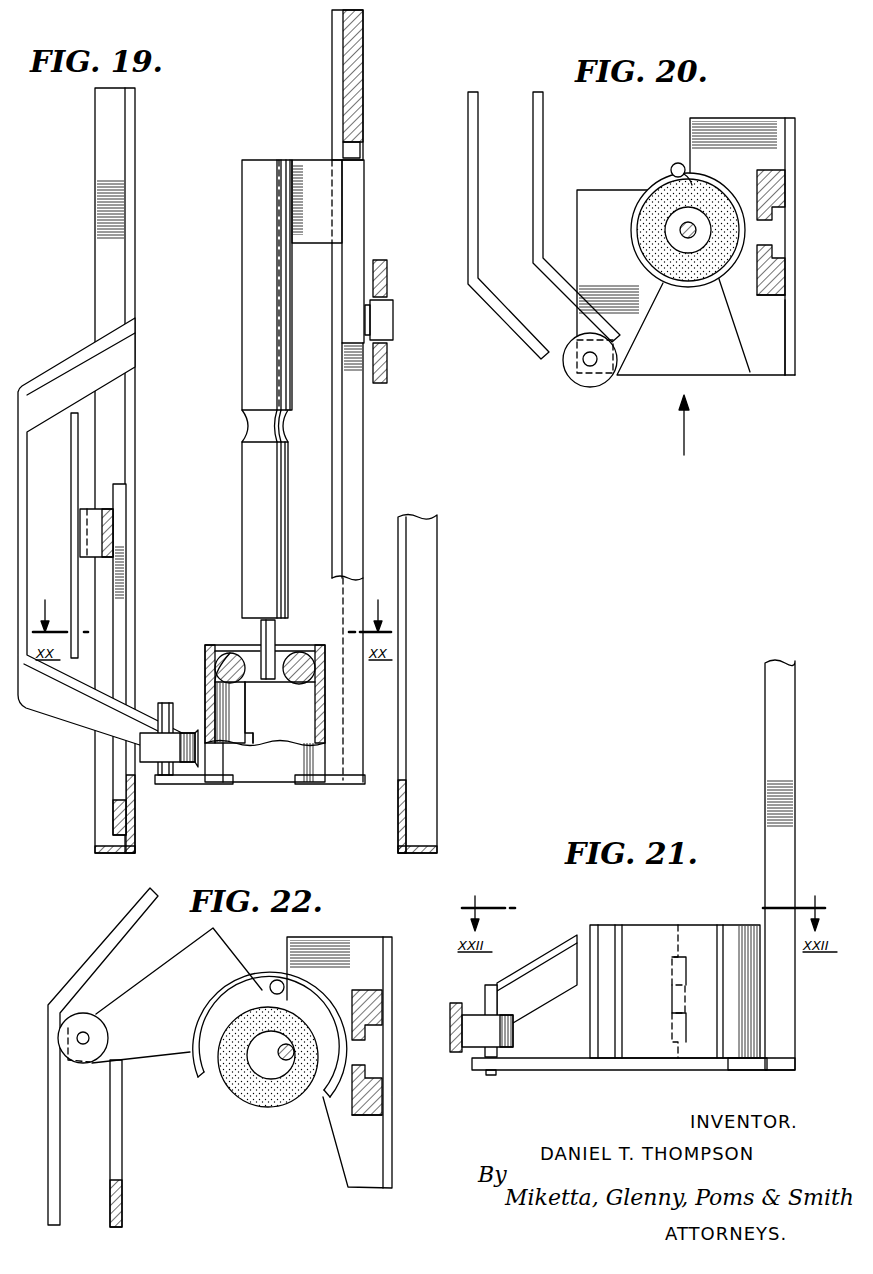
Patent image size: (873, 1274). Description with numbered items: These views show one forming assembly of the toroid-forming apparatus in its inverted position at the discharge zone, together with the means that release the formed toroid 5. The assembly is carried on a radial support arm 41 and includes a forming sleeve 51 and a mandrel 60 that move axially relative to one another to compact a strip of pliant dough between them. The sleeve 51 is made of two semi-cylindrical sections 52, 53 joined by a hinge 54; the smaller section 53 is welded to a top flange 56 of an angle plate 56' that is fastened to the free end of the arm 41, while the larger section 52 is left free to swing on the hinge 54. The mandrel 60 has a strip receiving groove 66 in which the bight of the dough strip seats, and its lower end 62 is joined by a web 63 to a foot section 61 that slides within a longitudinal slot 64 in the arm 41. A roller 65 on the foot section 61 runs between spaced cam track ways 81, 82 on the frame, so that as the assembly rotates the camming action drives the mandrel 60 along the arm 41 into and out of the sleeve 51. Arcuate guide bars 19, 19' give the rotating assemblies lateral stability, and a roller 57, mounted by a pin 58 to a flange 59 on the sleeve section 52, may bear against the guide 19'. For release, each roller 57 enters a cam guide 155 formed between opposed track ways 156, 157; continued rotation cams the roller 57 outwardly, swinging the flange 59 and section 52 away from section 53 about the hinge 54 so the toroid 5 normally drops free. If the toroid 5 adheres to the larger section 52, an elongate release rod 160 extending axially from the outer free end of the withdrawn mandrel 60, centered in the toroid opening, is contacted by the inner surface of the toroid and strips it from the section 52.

In FIG. 19, the toroid 5 is at (299, 653).
In FIG. 20, the toroid 5 is at (702, 182).
In FIG. 22, the toroid 5 is at (278, 1118).
In FIG. 19, the guide bar 19 is at (275, 668).
In FIG. 19, the guide bar 19' is at (92, 470).
In FIG. 19, the radial support arm 41 is at (333, 75).
In FIG. 20, the radial support arm 41 is at (772, 288).
In FIG. 21, the radial support arm 41 is at (771, 733).
In FIG. 22, the radial support arm 41 is at (380, 1108).
In FIG. 19, the forming sleeve 51 is at (200, 662).
In FIG. 20, the forming sleeve 51 is at (678, 287).
In FIG. 21, the forming sleeve 51 is at (656, 918).
In FIG. 19, the semi-cylindrical sleeve section 52 is at (215, 690).
In FIG. 21, the semi-cylindrical sleeve section 52 is at (607, 936).
In FIG. 22, the semi-cylindrical sleeve section 52 is at (203, 1008).
In FIG. 19, the semi-cylindrical sleeve section 53 is at (322, 706).
In FIG. 20, the semi-cylindrical sleeve section 53 is at (735, 190).
In FIG. 21, the semi-cylindrical sleeve section 53 is at (736, 935).
In FIG. 22, the semi-cylindrical sleeve section 53 is at (312, 1000).
In FIG. 19, the hinge 54 is at (253, 724).
In FIG. 20, the hinge 54 is at (674, 163).
In FIG. 21, the hinge 54 is at (679, 930).
In FIG. 22, the hinge 54 is at (277, 980).
In FIG. 20, the top flange 56 is at (742, 239).
In FIG. 21, the top flange 56 is at (756, 1080).
In FIG. 20, the angle plate 56' is at (806, 337).
In FIG. 22, the angle plate 56' is at (358, 1062).
In FIG. 19, the roller 57 is at (150, 765).
In FIG. 20, the roller 57 is at (598, 383).
In FIG. 21, the roller 57 is at (510, 1047).
In FIG. 22, the roller 57 is at (60, 1038).
In FIG. 20, the pin 58 is at (598, 361).
In FIG. 21, the pin 58 is at (487, 995).
In FIG. 22, the pin 58 is at (84, 1031).
In FIG. 19, the flange 59 is at (205, 784).
In FIG. 20, the flange 59 is at (612, 197).
In FIG. 21, the flange 59 is at (572, 1070).
In FIG. 22, the flange 59 is at (200, 950).
In FIG. 19, the mandrel 60 is at (242, 553).
In FIG. 19, the foot section 61 is at (357, 180).
In FIG. 19, the lower end of the mandrel 62 is at (242, 198).
In FIG. 19, the web 63 is at (305, 160).
In FIG. 19, the slot 64 is at (362, 473).
In FIG. 20, the slot 64 is at (776, 248).
In FIG. 22, the slot 64 is at (373, 1031).
In FIG. 19, the roller 65 is at (393, 316).
In FIG. 19, the strip receiving groove 66 is at (245, 430).
In FIG. 19, the track way 81 is at (388, 268).
In FIG. 19, the track way 82 is at (382, 384).
In FIG. 19, the cam guide 155 is at (33, 722).
In FIG. 20, the cam guide 155 is at (494, 329).
In FIG. 19, the track way 156 is at (62, 356).
In FIG. 20, the track way 156 is at (468, 211).
In FIG. 21, the track way 156 is at (558, 963).
In FIG. 22, the track way 156 is at (50, 1122).
In FIG. 19, the track way 157 is at (80, 447).
In FIG. 20, the track way 157 is at (543, 128).
In FIG. 22, the track way 157 is at (124, 1128).
In FIG. 19, the release rod 160 is at (261, 632).
In FIG. 20, the release rod 160 is at (681, 234).
In FIG. 22, the release rod 160 is at (280, 1058).